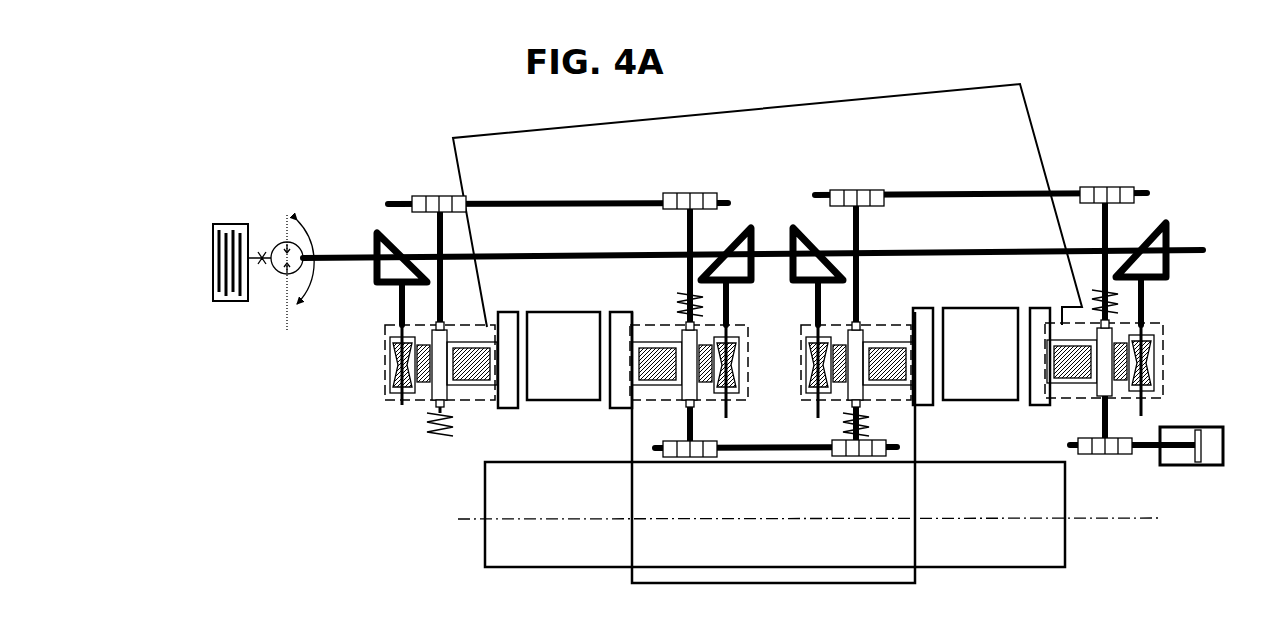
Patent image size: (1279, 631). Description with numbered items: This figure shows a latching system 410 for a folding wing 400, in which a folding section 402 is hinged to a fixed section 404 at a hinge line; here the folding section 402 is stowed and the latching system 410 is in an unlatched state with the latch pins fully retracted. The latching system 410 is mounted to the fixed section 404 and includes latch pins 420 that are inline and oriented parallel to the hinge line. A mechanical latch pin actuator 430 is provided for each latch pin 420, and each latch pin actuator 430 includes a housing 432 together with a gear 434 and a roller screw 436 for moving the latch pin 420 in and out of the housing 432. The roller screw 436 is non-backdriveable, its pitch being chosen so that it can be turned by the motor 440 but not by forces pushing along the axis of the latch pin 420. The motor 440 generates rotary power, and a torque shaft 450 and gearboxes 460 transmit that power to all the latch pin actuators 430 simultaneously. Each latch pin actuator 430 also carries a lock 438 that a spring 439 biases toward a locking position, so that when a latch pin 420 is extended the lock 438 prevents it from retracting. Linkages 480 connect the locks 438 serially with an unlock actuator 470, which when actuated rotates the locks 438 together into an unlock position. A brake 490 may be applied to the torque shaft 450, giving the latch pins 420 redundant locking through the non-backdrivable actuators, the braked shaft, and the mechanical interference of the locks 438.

The folding wing 400 is at (1158, 75).
The folding section 402 is at (1068, 553).
The fixed section 404 is at (1019, 84).
The latching system 410 is at (239, 286).
The latch pin 420 is at (487, 405).
The latch pin actuator 430 is at (776, 379).
The housing 432 is at (386, 370).
The gear 434 is at (395, 352).
The roller screw 436 is at (472, 386).
The lock 438 is at (428, 396).
The spring 439 is at (427, 430).
The motor 440 is at (273, 246).
The torque shaft 450 is at (592, 253).
The gearbox 460 is at (377, 276).
The unlock actuator 470 is at (1205, 465).
The linkage 480 is at (604, 199).
The brake 490 is at (224, 301).